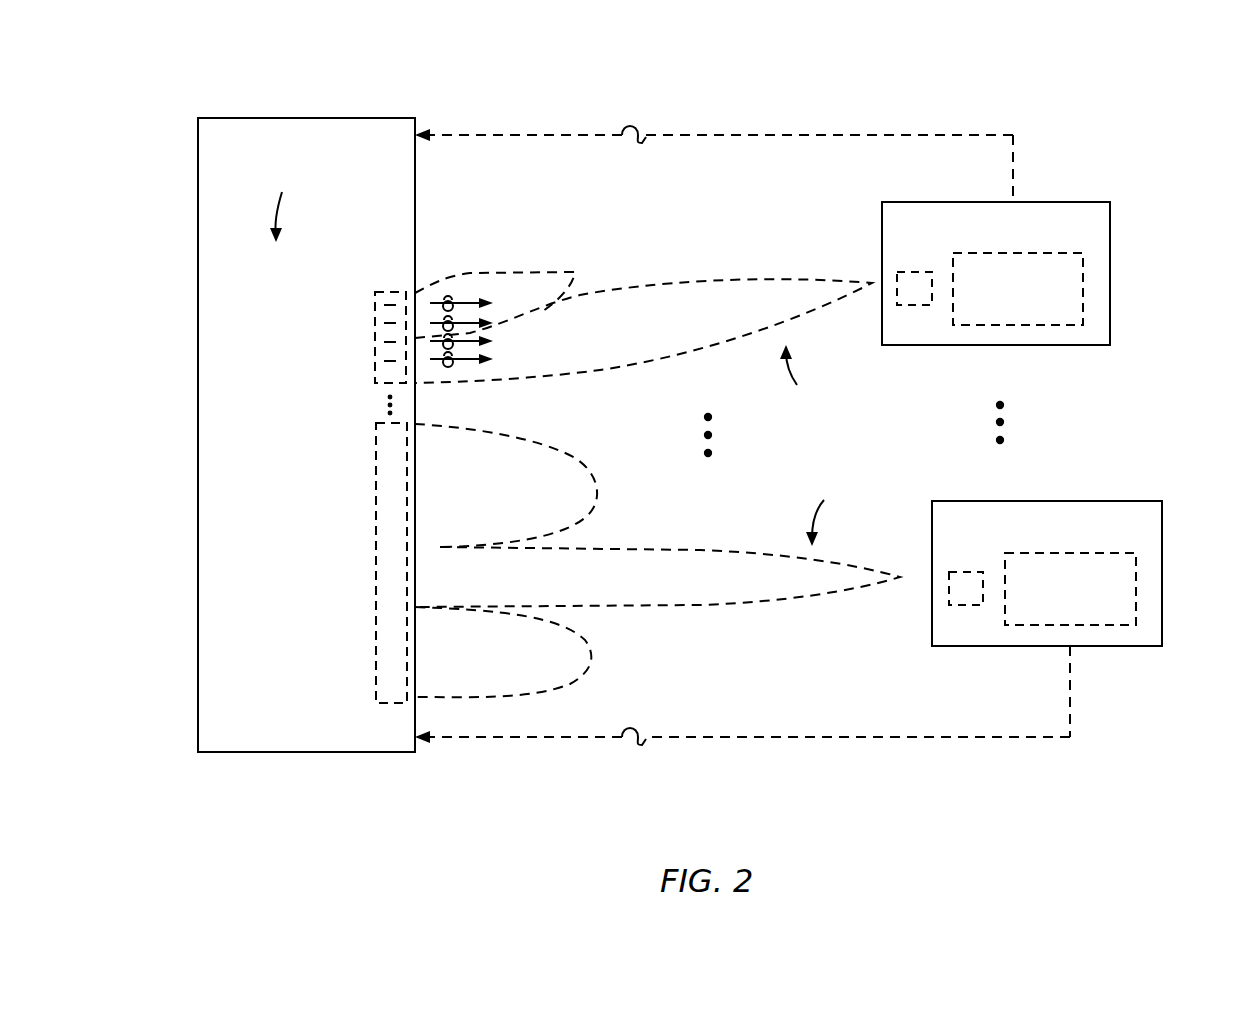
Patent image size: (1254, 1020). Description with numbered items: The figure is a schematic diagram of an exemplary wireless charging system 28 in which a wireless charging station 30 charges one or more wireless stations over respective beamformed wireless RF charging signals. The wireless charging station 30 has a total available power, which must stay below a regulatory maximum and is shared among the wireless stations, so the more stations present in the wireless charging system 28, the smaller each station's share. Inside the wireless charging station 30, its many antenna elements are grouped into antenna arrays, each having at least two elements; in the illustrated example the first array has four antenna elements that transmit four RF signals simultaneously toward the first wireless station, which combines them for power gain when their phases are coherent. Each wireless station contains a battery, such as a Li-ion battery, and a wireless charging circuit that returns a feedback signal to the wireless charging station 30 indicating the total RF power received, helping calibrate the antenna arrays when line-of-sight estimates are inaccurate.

The wireless charging system 28 is at (1050, 88).
The wireless charging station 30 is at (318, 118).